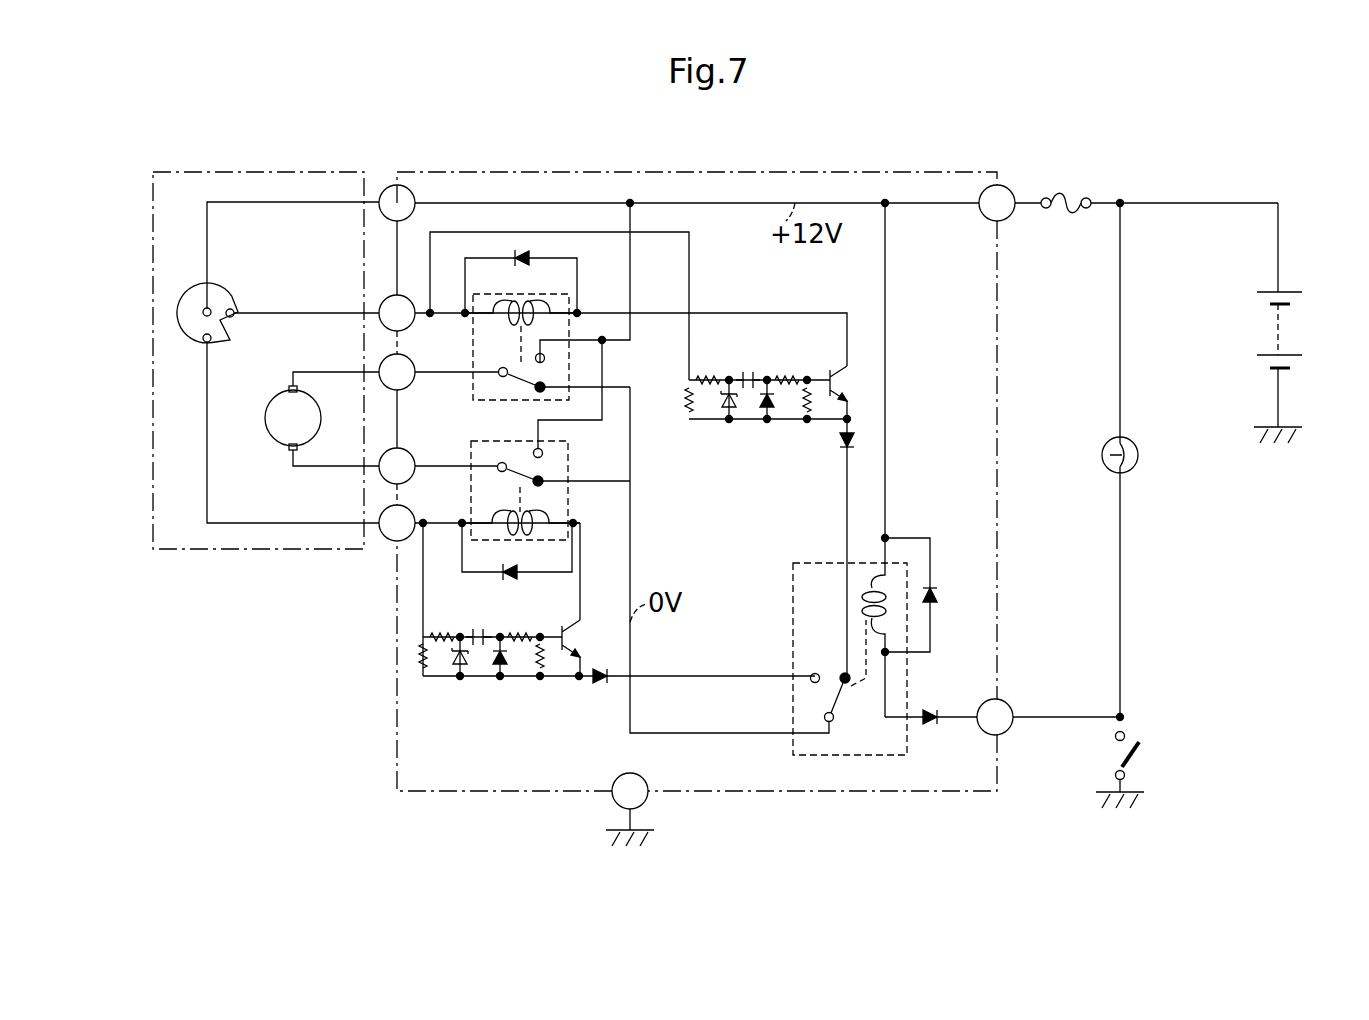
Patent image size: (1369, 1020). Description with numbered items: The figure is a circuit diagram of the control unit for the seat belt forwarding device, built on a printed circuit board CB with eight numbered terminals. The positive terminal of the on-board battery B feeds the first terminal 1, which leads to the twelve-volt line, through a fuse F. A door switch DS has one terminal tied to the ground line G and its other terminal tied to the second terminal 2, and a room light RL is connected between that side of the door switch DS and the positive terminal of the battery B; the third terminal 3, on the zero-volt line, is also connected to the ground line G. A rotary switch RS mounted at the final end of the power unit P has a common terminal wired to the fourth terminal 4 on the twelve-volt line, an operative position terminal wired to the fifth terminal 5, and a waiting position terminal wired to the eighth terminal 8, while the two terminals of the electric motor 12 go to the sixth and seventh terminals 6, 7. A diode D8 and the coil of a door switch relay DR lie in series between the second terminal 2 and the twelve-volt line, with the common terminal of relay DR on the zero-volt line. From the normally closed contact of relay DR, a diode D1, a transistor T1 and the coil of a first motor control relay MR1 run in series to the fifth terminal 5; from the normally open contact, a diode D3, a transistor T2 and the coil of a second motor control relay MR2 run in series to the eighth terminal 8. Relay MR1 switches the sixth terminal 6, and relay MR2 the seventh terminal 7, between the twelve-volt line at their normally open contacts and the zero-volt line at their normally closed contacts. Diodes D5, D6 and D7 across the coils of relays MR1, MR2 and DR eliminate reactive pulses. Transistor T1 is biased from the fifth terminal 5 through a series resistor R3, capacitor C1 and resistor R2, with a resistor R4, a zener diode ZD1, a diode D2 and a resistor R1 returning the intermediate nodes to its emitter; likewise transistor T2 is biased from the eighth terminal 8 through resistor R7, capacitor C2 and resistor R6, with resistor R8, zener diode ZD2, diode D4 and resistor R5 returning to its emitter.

The power unit P is at (262, 172).
The printed circuit board CB is at (757, 173).
The rotary switch RS is at (271, 362).
The electric motor 12 is at (322, 419).
The first terminal 1 is at (997, 203).
The second terminal 2 is at (995, 717).
The third terminal 3 is at (630, 791).
The fourth terminal 4 is at (397, 203).
The fifth terminal 5 is at (397, 313).
The sixth terminal 6 is at (397, 372).
The seventh terminal 7 is at (397, 466).
The eighth terminal 8 is at (397, 523).
The first relay for motor control MR1 is at (470, 394).
The second relay for motor control MR2 is at (470, 481).
The door switch relay DR is at (793, 627).
The diode D1 is at (833, 548).
The diode D2 is at (774, 416).
The diode D3 is at (697, 690).
The diode D4 is at (504, 673).
The diode D5 is at (521, 270).
The diode D6 is at (517, 562).
The diode D7 is at (929, 595).
The diode D8 is at (931, 732).
The zener diode ZD1 is at (733, 416).
The zener diode ZD2 is at (465, 673).
The resistor R1 is at (823, 403).
The resistor R2 is at (792, 367).
The resistor R3 is at (709, 367).
The resistor R4 is at (672, 402).
The resistor R5 is at (556, 661).
The resistor R6 is at (524, 623).
The resistor R7 is at (444, 623).
The resistor R8 is at (412, 675).
The capacitor C1 is at (749, 369).
The capacitor C2 is at (484, 625).
The transistor T1 is at (856, 392).
The transistor T2 is at (587, 648).
The fuse F is at (1146, 221).
The on-board battery B is at (1287, 323).
The room light RL is at (1139, 460).
The door switch DS is at (1152, 762).
The ground line G is at (875, 832).